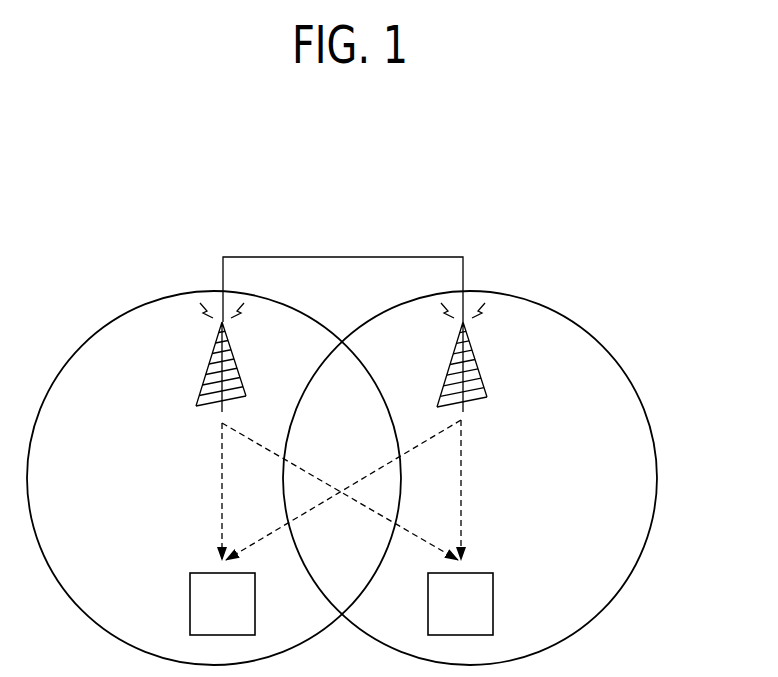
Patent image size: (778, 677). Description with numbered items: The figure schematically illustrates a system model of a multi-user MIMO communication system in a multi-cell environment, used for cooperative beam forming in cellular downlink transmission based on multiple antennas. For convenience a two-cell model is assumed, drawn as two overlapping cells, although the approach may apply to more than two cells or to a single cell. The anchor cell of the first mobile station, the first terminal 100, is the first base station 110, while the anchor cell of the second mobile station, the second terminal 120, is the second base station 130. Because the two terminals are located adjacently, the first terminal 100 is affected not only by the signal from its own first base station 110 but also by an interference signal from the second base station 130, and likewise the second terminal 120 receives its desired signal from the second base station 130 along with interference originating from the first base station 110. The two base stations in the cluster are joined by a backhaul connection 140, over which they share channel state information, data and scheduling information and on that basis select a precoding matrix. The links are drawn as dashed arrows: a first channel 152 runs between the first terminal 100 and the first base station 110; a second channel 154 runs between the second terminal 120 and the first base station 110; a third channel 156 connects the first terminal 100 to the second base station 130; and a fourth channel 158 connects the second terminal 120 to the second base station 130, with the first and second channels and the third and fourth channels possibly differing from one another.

The first terminal 100 is at (190, 602).
The first base station 110 is at (210, 369).
The second terminal 120 is at (493, 603).
The second base station 130 is at (476, 368).
The backhaul connection 140 is at (450, 257).
The first channel 152 is at (222, 467).
The second channel 154 is at (302, 468).
The third channel 156 is at (302, 514).
The fourth channel 158 is at (461, 467).